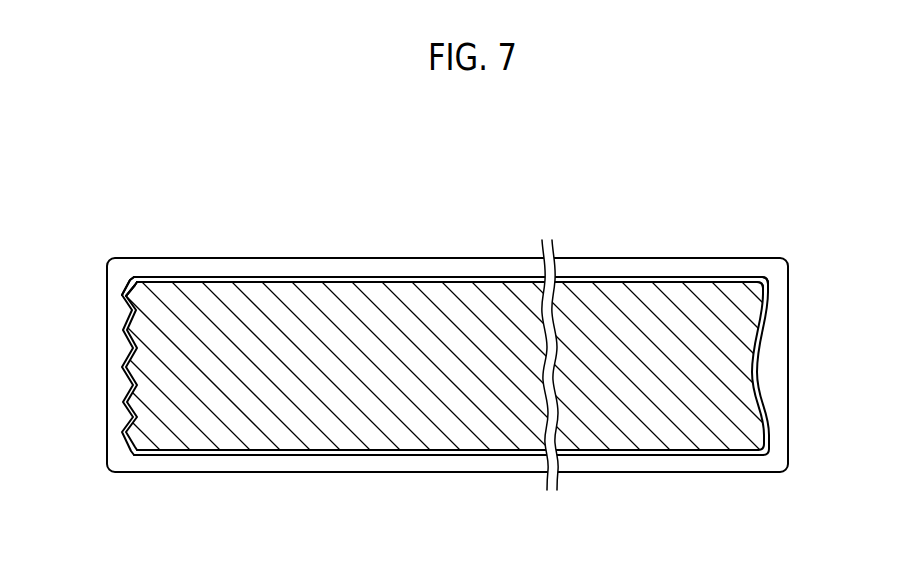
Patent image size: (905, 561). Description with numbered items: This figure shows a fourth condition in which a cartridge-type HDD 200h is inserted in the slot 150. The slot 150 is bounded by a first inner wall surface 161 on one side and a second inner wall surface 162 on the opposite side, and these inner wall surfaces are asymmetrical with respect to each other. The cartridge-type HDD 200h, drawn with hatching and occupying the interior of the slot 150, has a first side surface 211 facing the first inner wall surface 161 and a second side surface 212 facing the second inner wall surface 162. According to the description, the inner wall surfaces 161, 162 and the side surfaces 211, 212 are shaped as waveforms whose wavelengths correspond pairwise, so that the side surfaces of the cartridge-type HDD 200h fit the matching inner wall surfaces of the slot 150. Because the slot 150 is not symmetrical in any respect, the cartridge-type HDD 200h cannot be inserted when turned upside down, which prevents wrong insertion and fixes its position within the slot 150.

The slot 150 is at (444, 252).
The cartridge-type HDD 200h is at (417, 420).
The first inner wall surface 161 is at (123, 332).
The second inner wall surface 162 is at (768, 293).
The first side surface 211 is at (126, 296).
The second side surface 212 is at (758, 298).